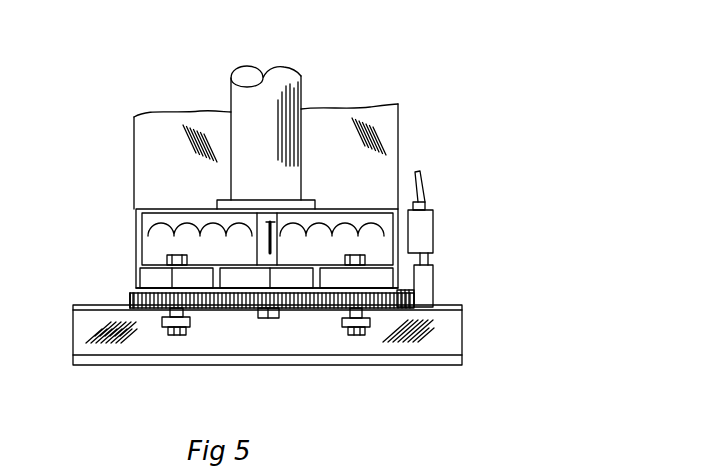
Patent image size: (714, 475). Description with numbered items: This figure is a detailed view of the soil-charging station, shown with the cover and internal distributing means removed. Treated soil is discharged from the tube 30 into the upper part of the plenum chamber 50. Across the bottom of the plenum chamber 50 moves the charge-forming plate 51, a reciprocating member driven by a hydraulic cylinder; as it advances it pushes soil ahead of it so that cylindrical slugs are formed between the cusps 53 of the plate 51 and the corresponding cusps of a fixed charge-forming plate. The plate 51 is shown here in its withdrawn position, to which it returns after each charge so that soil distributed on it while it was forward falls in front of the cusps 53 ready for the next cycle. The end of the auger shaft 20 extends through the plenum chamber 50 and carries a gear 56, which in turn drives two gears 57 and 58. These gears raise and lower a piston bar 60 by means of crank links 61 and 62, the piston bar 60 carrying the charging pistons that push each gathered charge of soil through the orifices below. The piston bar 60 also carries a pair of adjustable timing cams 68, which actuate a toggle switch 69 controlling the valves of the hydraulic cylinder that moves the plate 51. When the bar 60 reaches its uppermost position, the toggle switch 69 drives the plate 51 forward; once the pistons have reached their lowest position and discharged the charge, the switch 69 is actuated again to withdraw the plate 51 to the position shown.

The tube 30 is at (231, 92).
The charge-forming plate 51 is at (388, 115).
The plenum chamber 50 is at (142, 250).
The cusps 53 is at (147, 218).
The auger shaft 20 is at (268, 251).
The toggle switch 69 is at (427, 219).
The adjustable timing cams 68 is at (427, 294).
The piston bar 60 is at (452, 344).
The gear 56 is at (297, 310).
The gear 57 is at (150, 307).
The crank link 61 is at (190, 323).
The crank link 62 is at (368, 326).
The gear 58 is at (397, 310).